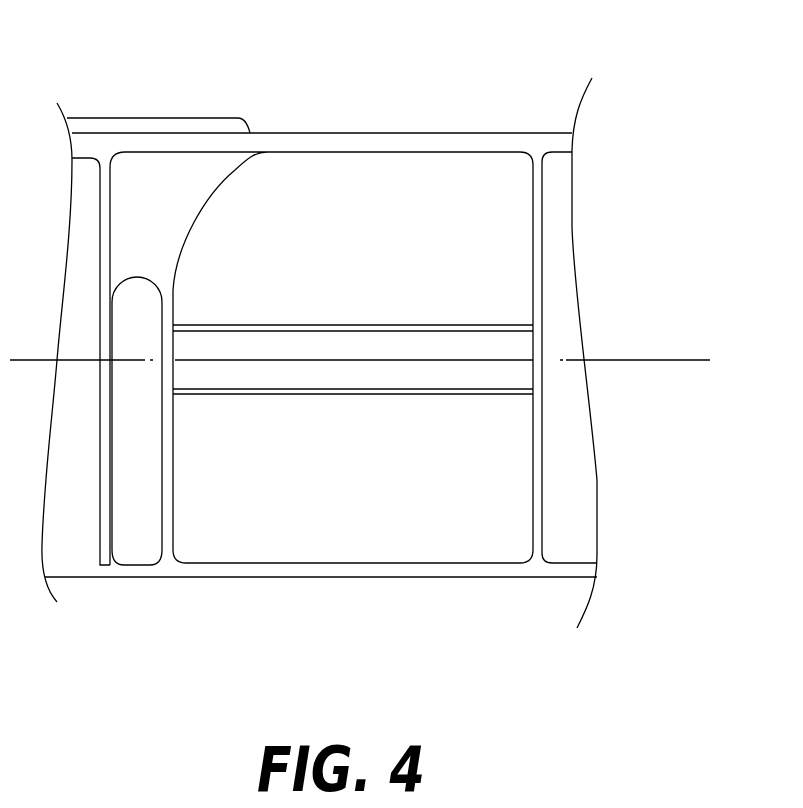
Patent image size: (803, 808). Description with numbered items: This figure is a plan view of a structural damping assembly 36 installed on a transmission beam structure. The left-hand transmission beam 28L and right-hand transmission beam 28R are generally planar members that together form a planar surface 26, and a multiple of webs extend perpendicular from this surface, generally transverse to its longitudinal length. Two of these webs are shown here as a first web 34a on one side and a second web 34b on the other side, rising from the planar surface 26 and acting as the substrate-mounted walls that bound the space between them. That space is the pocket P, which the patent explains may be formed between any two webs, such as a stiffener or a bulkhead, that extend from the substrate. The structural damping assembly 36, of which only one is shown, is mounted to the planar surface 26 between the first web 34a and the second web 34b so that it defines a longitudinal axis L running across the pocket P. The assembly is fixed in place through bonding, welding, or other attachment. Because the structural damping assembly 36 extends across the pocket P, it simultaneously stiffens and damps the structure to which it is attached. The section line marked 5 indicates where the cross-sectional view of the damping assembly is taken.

The left-hand transmission beam 28L is at (319, 68).
The right-hand transmission beam 28R is at (320, 131).
The planar surface 26 is at (338, 517).
The first web 34a is at (167, 473).
The second web 34b is at (542, 458).
The structural damping assembly 36 is at (283, 405).
The pocket P is at (462, 530).
The longitudinal axis L is at (640, 359).
The section line 5- 5 is at (415, 308).